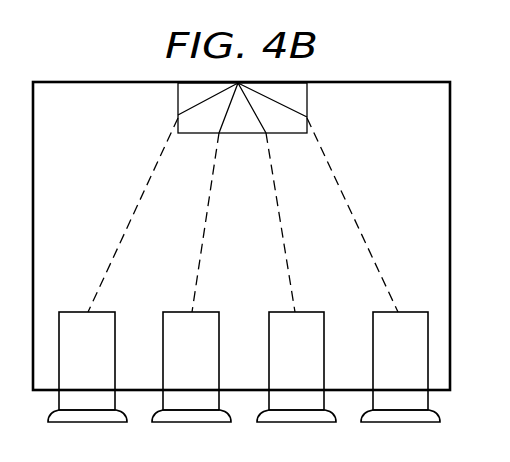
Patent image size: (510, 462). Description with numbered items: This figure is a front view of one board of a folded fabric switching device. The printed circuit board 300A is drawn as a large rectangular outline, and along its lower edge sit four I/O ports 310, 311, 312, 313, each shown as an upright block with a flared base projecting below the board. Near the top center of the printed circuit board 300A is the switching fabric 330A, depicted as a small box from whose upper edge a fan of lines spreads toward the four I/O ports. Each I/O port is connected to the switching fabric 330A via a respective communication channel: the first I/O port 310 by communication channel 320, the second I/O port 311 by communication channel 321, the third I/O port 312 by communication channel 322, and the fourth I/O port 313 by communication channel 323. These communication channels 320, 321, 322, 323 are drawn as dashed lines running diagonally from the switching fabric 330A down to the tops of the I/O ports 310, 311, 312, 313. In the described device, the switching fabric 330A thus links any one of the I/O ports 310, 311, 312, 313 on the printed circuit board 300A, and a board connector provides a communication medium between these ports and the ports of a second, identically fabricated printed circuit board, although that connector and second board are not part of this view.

The printed circuit board 300A is at (373, 82).
The switching fabric 330A is at (178, 106).
The communication channel 320 is at (135, 207).
The communication channel 321 is at (200, 250).
The communication channel 322 is at (285, 250).
The communication channel 323 is at (350, 207).
The I/O port 310 is at (74, 317).
The I/O port 311 is at (178, 317).
The I/O port 312 is at (310, 317).
The I/O port 313 is at (414, 317).